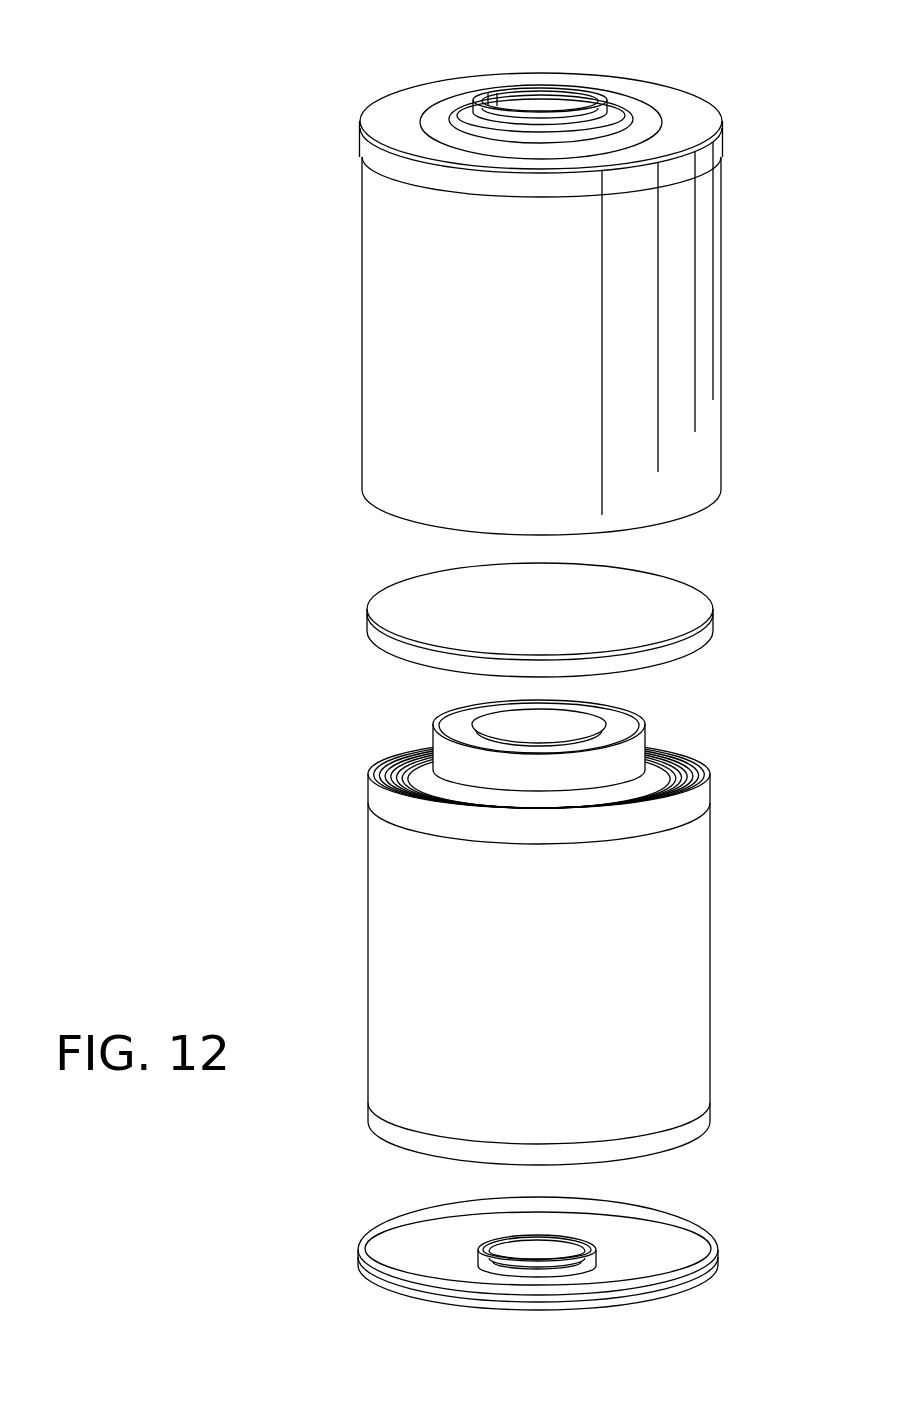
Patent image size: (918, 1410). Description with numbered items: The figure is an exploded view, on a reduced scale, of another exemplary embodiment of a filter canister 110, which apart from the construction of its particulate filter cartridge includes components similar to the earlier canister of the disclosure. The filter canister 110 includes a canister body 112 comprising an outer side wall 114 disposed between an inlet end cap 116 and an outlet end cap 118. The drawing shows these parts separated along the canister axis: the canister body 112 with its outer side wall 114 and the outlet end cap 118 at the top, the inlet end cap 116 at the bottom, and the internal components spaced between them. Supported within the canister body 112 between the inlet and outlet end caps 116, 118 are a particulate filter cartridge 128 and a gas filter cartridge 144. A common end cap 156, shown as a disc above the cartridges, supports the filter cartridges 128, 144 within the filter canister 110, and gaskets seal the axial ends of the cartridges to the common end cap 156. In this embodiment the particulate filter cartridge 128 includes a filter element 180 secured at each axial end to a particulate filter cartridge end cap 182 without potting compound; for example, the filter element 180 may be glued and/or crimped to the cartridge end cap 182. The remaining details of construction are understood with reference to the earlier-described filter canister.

The filter canister 110 is at (346, 100).
The canister body 112 is at (348, 235).
The outer side wall 114 is at (713, 272).
The outlet end cap 118 is at (678, 101).
The common end cap 156 is at (688, 612).
The particulate filter cartridge 128 is at (648, 722).
The particulate filter cartridge end cap 182 is at (457, 717).
The filter element 180 is at (448, 774).
The gas filter cartridge 144 is at (722, 883).
The inlet end cap 116 is at (712, 1255).